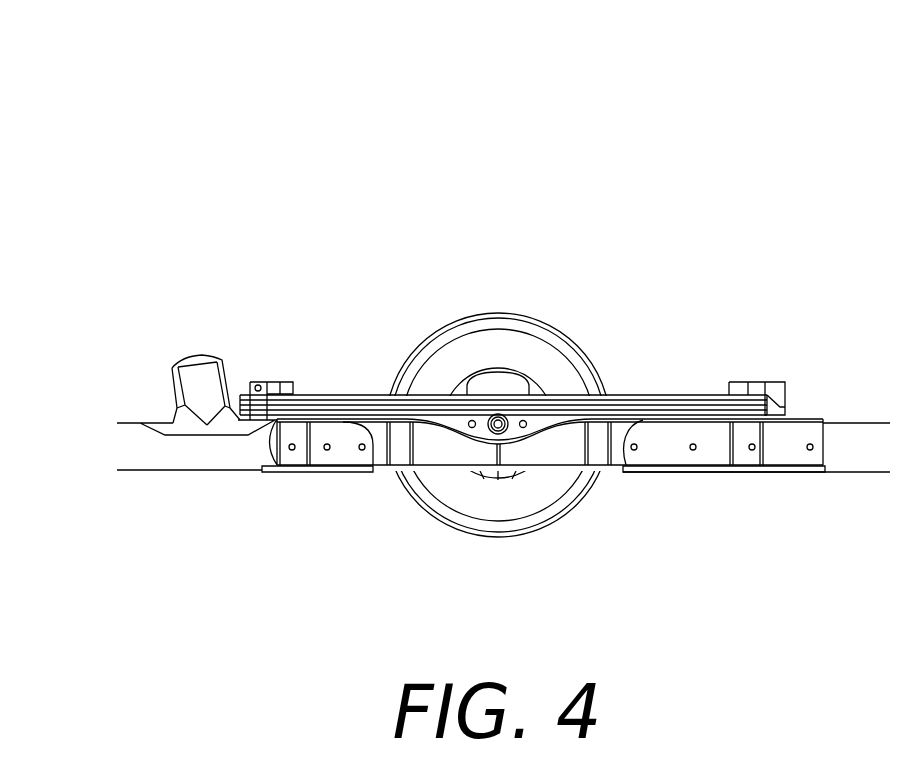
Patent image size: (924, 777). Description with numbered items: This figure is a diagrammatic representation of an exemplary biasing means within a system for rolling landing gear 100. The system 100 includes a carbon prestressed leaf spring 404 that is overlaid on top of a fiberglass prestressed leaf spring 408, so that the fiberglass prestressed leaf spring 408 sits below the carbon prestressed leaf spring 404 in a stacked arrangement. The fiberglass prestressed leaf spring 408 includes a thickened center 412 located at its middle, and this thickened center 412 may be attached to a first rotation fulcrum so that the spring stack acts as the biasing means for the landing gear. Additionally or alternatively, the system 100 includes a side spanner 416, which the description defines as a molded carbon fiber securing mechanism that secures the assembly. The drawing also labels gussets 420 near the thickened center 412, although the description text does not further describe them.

The system for rolling landing gear 100 is at (503, 302).
The carbon prestressed leaf spring 404 is at (354, 386).
The fiberglass prestressed leaf spring 408 is at (632, 400).
The thickened center 412 is at (545, 427).
The side spanner 416 is at (336, 466).
The gussets 420 is at (495, 477).